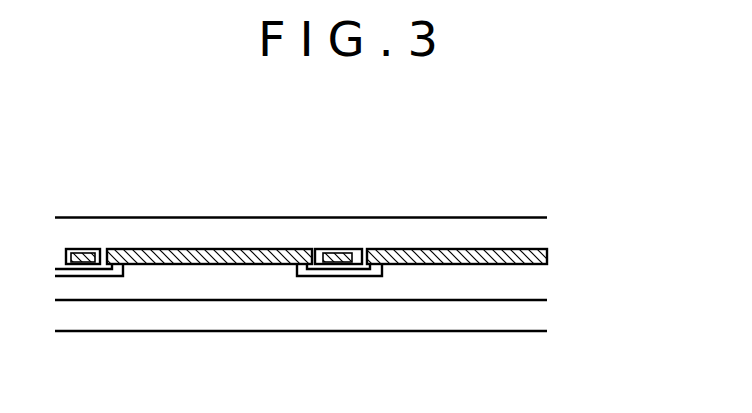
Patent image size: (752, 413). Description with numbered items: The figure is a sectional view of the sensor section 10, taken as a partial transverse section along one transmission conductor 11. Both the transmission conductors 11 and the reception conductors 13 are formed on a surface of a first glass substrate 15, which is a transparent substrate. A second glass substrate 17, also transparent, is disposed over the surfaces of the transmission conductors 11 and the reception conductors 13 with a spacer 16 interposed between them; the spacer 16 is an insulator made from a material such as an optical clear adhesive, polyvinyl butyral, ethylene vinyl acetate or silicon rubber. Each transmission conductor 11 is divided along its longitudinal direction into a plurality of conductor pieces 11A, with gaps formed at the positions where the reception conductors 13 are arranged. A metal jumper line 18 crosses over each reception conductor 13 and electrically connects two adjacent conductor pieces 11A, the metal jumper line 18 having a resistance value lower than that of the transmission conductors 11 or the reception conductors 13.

The sensor section 10 is at (346, 239).
The transmission conductor 11 is at (327, 211).
The conductor piece 11A is at (185, 249).
The reception conductor 13 is at (83, 249).
The first glass substrate 15 is at (535, 233).
The spacer 16 is at (535, 280).
The second glass substrate 17 is at (535, 315).
The metal jumper line 18 is at (362, 276).